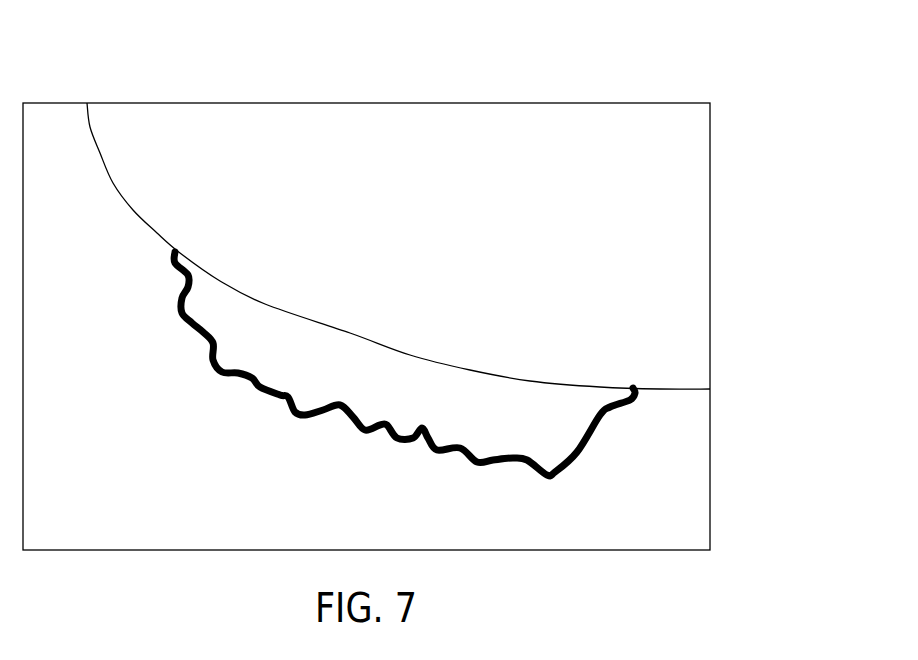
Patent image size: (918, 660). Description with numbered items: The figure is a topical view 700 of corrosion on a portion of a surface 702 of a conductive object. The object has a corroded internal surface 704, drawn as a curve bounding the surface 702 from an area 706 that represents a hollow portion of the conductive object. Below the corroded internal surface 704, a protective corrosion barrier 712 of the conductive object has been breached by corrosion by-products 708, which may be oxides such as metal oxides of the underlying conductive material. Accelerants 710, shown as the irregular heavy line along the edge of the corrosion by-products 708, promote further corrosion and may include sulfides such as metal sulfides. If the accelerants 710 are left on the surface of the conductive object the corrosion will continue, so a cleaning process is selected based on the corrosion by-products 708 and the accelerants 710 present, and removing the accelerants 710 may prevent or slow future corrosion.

The view 700 is at (669, 47).
The surface 702 is at (94, 523).
The corroded internal surface 704 is at (115, 182).
The area 706 is at (662, 153).
The corrosion by-products 708 is at (350, 381).
The accelerants 710 is at (180, 295).
The protective corrosion barrier 712 is at (645, 452).